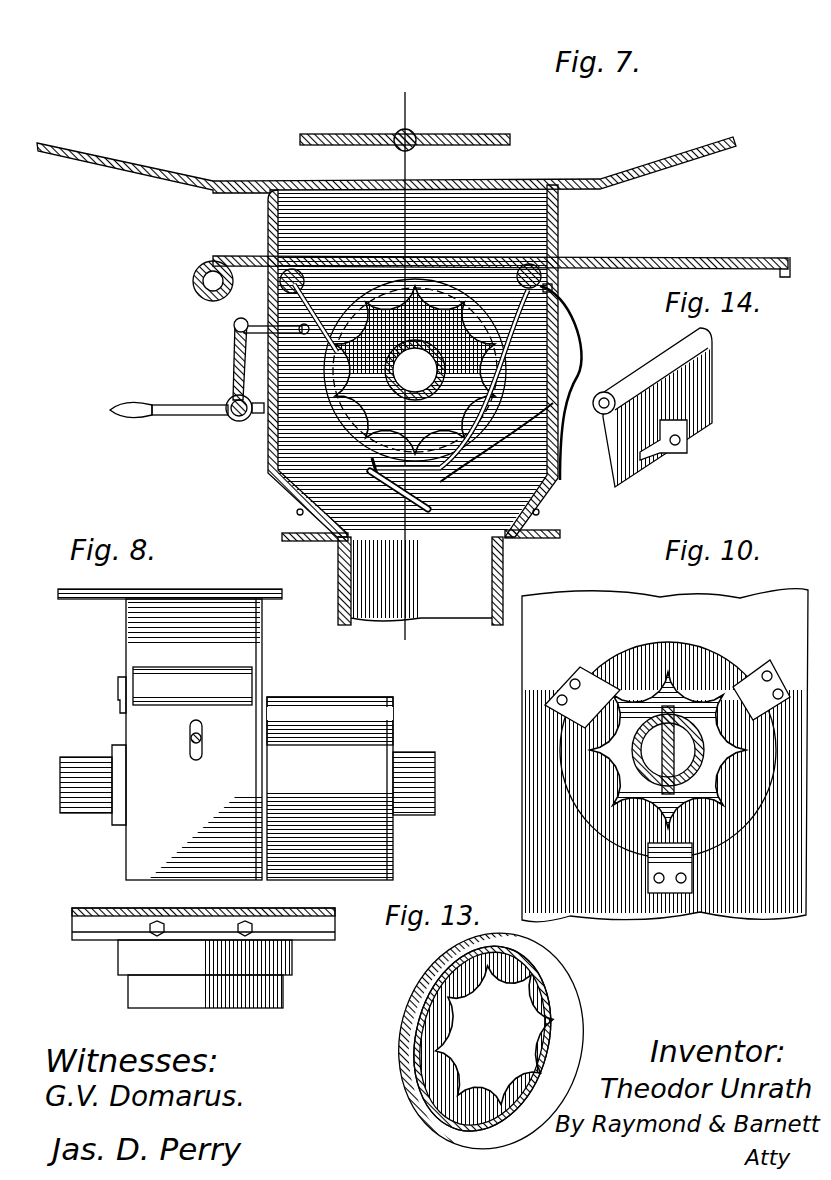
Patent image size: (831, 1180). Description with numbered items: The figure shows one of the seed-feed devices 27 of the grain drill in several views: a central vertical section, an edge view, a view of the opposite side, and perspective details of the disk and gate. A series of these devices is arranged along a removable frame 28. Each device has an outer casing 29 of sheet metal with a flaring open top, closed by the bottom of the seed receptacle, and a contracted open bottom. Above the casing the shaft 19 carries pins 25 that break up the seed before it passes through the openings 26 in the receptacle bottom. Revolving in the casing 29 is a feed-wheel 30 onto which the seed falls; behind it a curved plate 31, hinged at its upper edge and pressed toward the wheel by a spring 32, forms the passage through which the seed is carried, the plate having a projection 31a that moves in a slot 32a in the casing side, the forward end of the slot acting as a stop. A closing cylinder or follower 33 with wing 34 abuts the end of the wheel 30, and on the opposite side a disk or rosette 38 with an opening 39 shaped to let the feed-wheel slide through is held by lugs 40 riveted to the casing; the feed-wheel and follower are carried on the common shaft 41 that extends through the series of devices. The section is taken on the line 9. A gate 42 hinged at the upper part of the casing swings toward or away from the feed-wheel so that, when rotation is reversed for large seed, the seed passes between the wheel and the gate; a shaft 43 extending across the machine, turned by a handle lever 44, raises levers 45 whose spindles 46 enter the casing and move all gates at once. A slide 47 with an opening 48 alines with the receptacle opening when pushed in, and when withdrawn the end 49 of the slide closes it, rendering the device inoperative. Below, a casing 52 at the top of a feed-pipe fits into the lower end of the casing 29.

In FIG. 7, the section line 9— 9 is at (418, 98).
In FIG. 7, the shaft 19 is at (412, 136).
In FIG. 7, the pins 25 is at (368, 134).
In FIG. 7, the openings 26 is at (355, 185).
In FIG. 7, the seed-feed devices 27 is at (286, 535).
In FIG. 8, the seed-feed devices 27 is at (335, 940).
In FIG. 7, the frame 28 is at (560, 541).
In FIG. 7, the outer casing 29 is at (560, 215).
In FIG. 8, the outer casing 29 is at (242, 638).
In FIG. 7, the feed-wheel 30 is at (493, 353).
In FIG. 7, the curved plate 31 is at (510, 358).
In FIG. 7, the projection 31a is at (372, 470).
In FIG. 7, the spring 32 is at (560, 485).
In FIG. 7, the slot 32a is at (432, 506).
In FIG. 8, the closing cylinder or follower 33 is at (330, 708).
In FIG. 8, the wing 34 is at (317, 867).
In FIG. 10, the disk or rosette 38 is at (722, 797).
In FIG. 13, the disk or rosette 38 is at (574, 1018).
In FIG. 8, the opening 39 is at (126, 855).
In FIG. 10, the opening 39 is at (600, 746).
In FIG. 13, the opening 39 is at (535, 985).
In FIG. 10, the lugs 40 is at (570, 668).
In FIG. 7, the hub shaft 41 is at (422, 352).
In FIG. 8, the hub shaft 41 is at (415, 758).
In FIG. 10, the hub shaft 41 is at (650, 768).
In FIG. 7, the gate 42 is at (302, 276).
In FIG. 14, the gate 42 is at (697, 398).
In FIG. 7, the shaft 43 is at (234, 418).
In FIG. 7, the handle lever 44 is at (145, 406).
In FIG. 7, the levers 45 is at (234, 356).
In FIG. 7, the spindle 46 is at (245, 322).
In FIG. 8, the spindle 46 is at (195, 760).
In FIG. 7, the slide 47 is at (222, 258).
In FIG. 8, the slide 47 is at (160, 688).
In FIG. 7, the opening 48 is at (386, 262).
In FIG. 7, the end of the slide 49 is at (690, 257).
In FIG. 7, the casing 52 is at (345, 577).
In FIG. 8, the casing 52 is at (145, 1002).